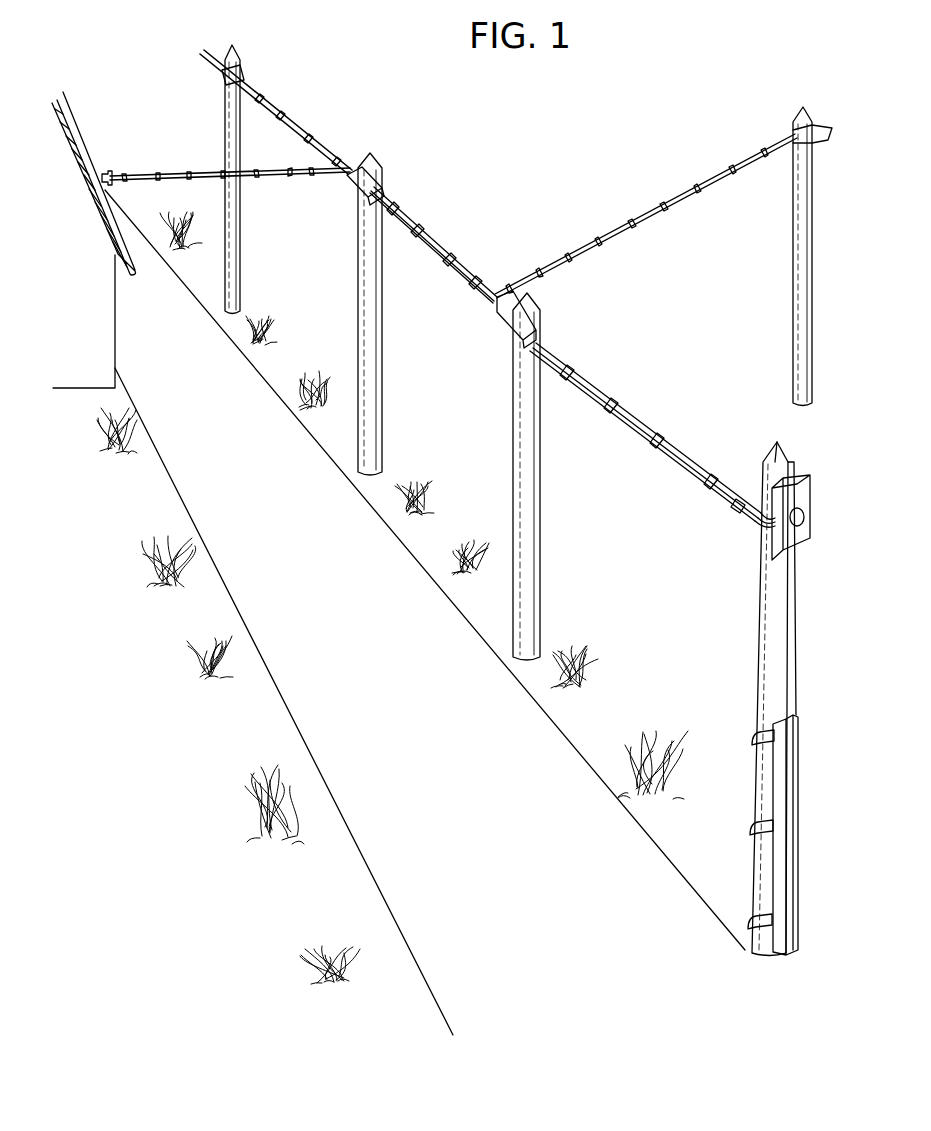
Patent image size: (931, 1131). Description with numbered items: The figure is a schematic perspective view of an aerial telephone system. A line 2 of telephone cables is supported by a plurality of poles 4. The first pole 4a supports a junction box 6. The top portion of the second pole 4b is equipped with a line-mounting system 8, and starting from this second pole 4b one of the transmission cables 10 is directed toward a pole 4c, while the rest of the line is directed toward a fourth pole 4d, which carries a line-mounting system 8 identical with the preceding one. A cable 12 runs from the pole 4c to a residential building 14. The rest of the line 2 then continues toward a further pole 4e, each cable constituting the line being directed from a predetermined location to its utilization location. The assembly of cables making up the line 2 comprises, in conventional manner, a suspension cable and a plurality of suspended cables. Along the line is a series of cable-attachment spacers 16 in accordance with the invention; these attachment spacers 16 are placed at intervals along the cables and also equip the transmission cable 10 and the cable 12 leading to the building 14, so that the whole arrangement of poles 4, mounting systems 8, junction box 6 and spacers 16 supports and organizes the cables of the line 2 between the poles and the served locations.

The line 2 is at (608, 420).
The poles 4 is at (527, 500).
The first pole 4a is at (757, 628).
The second pole 4b is at (538, 494).
The pole 4c is at (796, 270).
The fourth pole 4d is at (380, 342).
The pole 4e is at (240, 230).
The junction box 6 is at (802, 478).
The line-mounting system 8 is at (350, 178).
The transmission cable 10 is at (626, 232).
The cable 12 is at (196, 181).
The residential building 14 is at (87, 148).
The cable-attachment spacers 16 is at (338, 160).